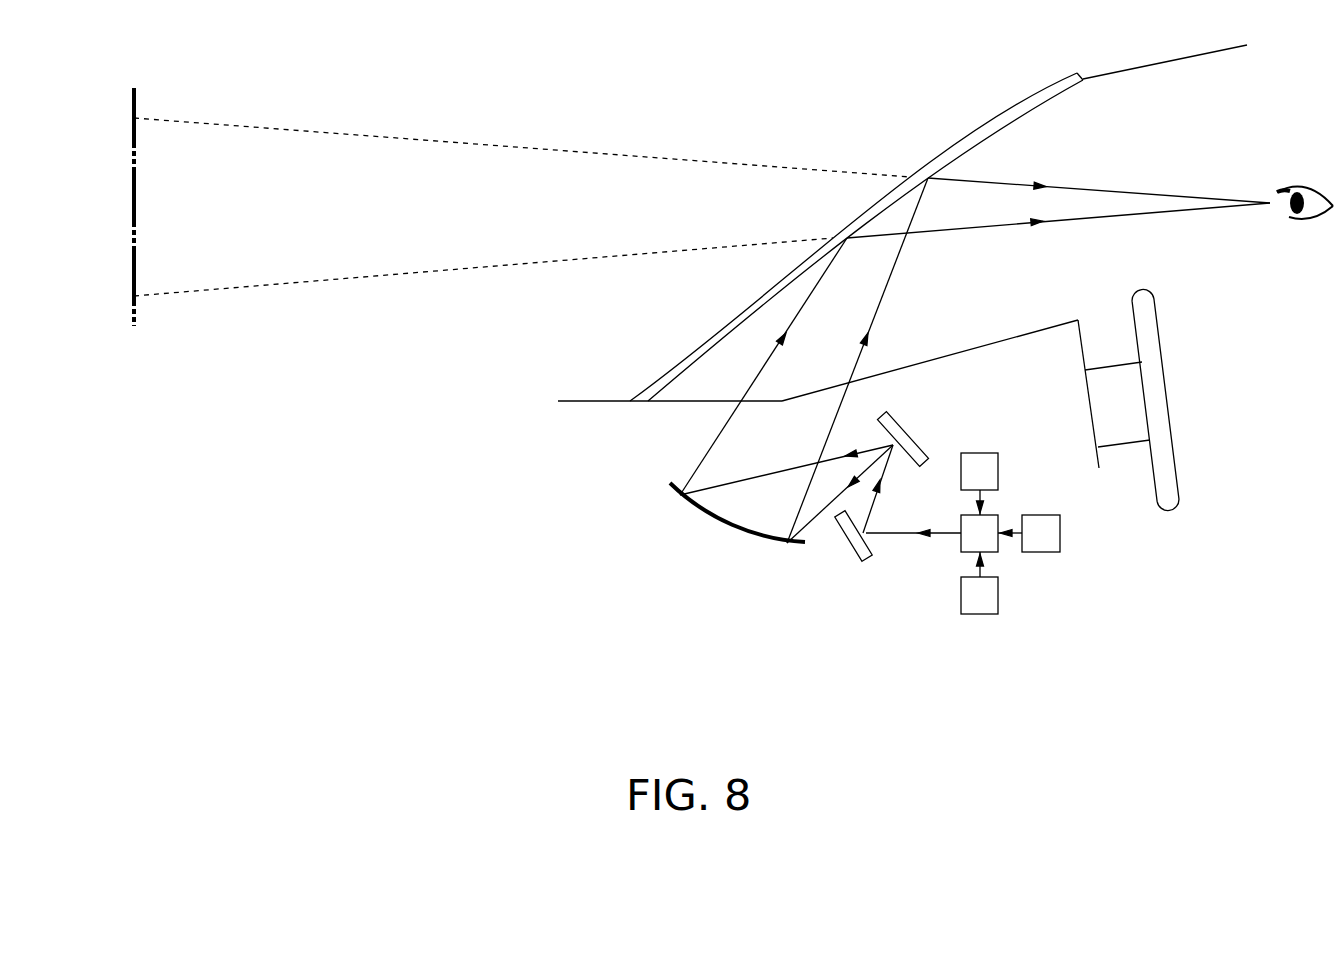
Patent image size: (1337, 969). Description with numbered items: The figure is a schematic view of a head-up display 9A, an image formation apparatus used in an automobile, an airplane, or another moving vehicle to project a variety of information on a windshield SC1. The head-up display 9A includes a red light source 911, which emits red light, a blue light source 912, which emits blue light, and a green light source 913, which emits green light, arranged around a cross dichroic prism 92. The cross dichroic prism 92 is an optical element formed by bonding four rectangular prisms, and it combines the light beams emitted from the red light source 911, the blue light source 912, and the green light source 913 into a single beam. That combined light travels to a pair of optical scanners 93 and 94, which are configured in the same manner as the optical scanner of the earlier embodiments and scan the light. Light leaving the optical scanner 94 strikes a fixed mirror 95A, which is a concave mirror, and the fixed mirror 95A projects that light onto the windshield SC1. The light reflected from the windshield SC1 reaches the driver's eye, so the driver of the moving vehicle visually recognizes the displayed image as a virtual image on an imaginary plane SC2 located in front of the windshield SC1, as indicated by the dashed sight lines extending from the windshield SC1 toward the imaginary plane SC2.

The windshield SC1 is at (967, 145).
The imaginary plane SC2 is at (131, 206).
The head-up display 9A is at (1046, 590).
The red light source 911 is at (977, 605).
The blue light source 912 is at (980, 460).
The green light source 913 is at (1040, 523).
The cross dichroic prism 92 is at (965, 543).
The optical scanner 93 is at (852, 545).
The optical scanner 94 is at (907, 430).
The fixed mirror 95A is at (720, 533).